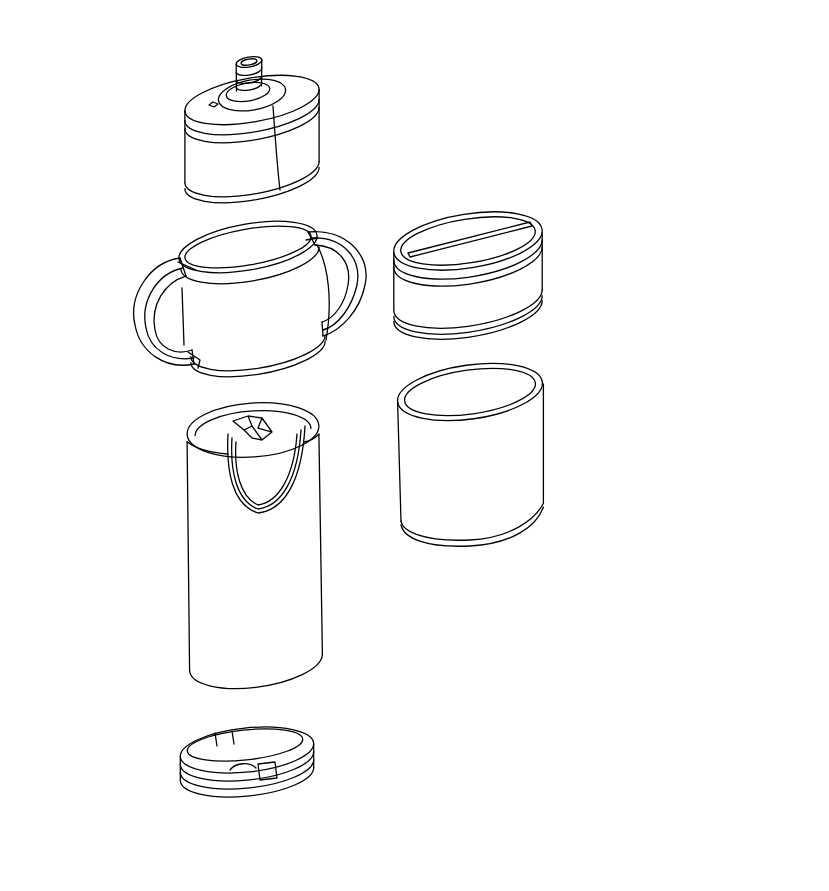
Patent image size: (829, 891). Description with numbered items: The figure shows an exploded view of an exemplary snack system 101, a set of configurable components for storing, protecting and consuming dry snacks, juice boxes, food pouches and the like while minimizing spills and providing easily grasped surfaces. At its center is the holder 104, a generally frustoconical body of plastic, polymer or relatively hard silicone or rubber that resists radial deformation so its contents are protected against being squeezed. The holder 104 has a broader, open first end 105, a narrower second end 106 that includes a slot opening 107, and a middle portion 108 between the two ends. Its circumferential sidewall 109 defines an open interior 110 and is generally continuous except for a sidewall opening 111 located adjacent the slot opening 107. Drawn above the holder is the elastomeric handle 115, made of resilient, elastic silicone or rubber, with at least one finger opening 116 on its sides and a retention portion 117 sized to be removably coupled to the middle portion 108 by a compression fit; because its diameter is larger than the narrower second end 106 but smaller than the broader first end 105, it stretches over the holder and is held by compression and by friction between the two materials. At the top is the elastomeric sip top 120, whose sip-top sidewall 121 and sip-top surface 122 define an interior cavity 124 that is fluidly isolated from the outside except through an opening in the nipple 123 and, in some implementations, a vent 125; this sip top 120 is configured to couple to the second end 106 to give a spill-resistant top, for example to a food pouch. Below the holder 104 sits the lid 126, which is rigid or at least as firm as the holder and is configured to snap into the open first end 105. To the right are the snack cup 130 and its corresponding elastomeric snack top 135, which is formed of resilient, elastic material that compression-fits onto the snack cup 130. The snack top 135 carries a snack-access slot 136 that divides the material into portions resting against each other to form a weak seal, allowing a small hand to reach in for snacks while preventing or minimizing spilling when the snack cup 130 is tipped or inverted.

The snack system 101 is at (621, 197).
The holder 104 is at (322, 602).
The first end 105 is at (182, 698).
The second end 106 is at (187, 420).
The slot opening 107 is at (269, 420).
The middle portion 108 is at (110, 570).
The circumferential sidewall 109 is at (188, 625).
The open interior 110 is at (307, 680).
The sidewall opening 111 is at (303, 485).
The elastomeric handle 115 is at (185, 250).
The finger opening 116 is at (128, 316).
The retention portion 117 is at (275, 327).
The elastomeric sip top 120 is at (184, 172).
The sip-top sidewall 121 is at (327, 134).
The sip-top surface 122 is at (299, 75).
The nipple 123 is at (232, 60).
The interior cavity 124 is at (319, 183).
The vent 125 is at (207, 103).
The lid 126 is at (315, 768).
The snack cup 130 is at (543, 505).
The elastomeric snack top 135 is at (540, 290).
The snack-access slot 136 is at (470, 228).